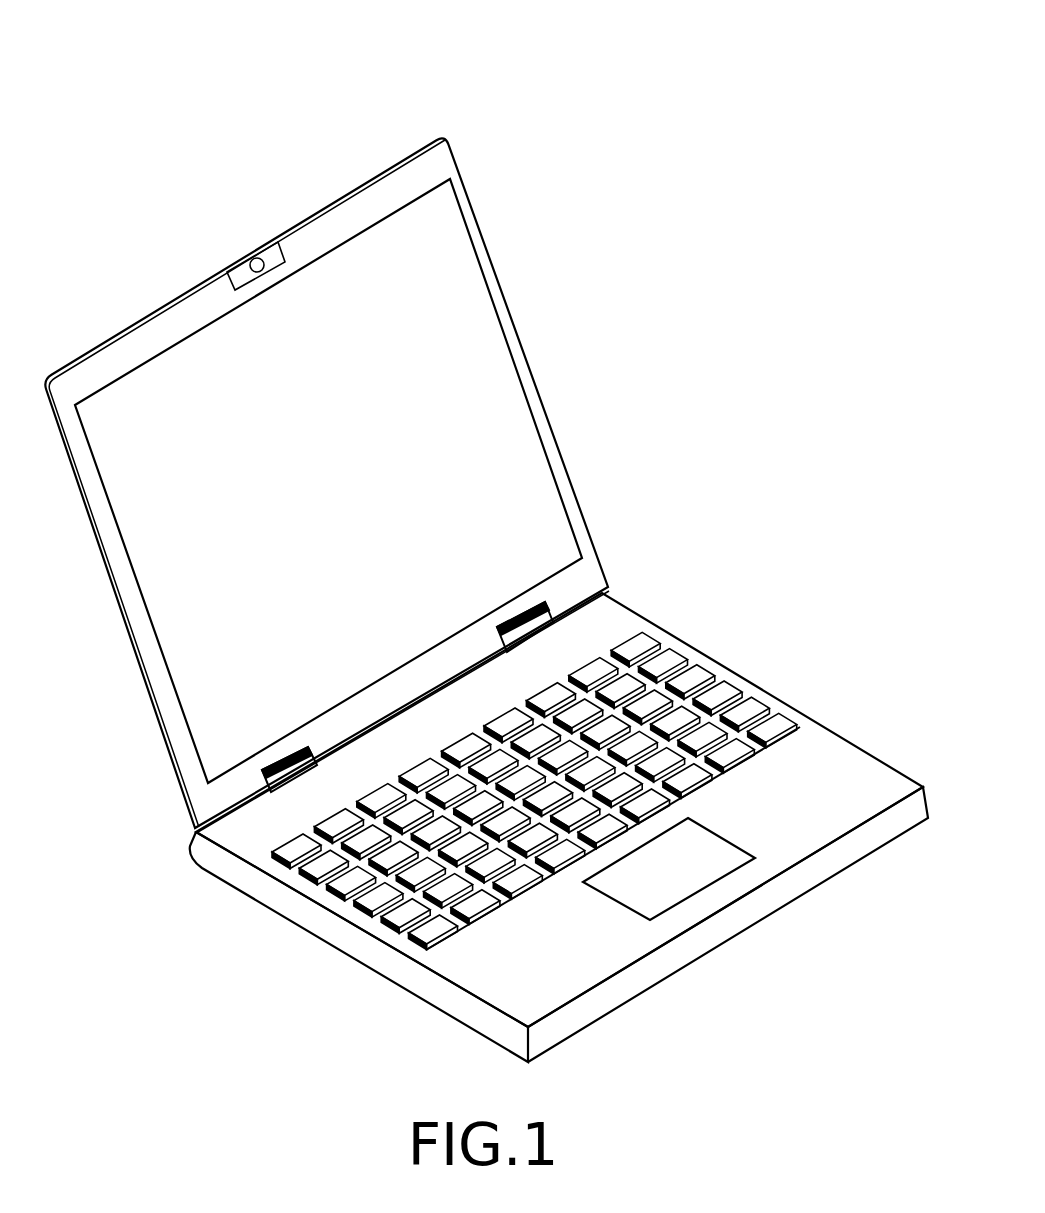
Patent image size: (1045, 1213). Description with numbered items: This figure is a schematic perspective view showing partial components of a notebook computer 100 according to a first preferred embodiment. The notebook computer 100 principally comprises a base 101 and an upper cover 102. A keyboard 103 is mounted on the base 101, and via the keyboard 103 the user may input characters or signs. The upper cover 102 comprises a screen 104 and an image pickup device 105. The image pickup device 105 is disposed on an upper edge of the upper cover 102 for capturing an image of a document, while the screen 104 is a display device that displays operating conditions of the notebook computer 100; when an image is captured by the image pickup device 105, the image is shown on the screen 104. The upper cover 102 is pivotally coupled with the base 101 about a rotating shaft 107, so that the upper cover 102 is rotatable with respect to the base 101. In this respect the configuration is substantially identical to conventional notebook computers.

The notebook computer 100 is at (676, 49).
The base 101 is at (743, 672).
The upper cover 102 is at (343, 485).
The keyboard 103 is at (400, 885).
The screen 104 is at (467, 220).
The image pickup device 105 is at (270, 252).
The rotating shaft 107 is at (287, 772).